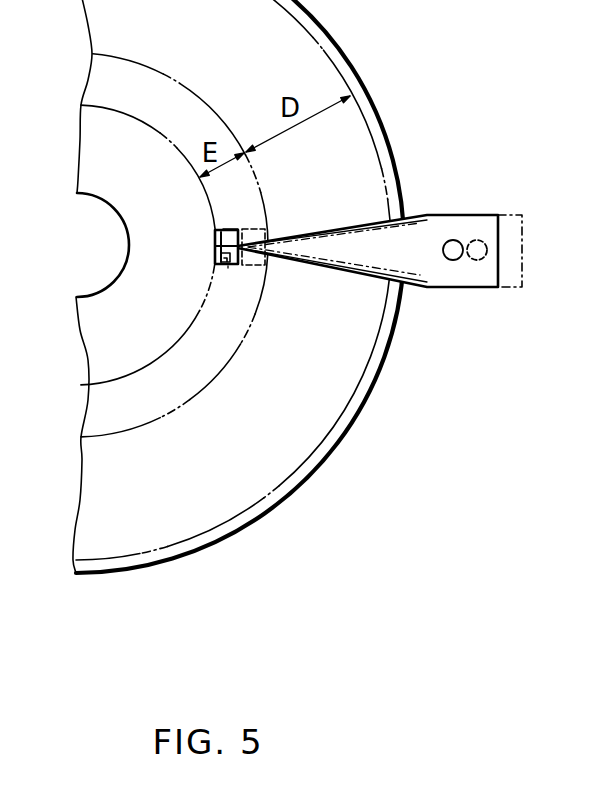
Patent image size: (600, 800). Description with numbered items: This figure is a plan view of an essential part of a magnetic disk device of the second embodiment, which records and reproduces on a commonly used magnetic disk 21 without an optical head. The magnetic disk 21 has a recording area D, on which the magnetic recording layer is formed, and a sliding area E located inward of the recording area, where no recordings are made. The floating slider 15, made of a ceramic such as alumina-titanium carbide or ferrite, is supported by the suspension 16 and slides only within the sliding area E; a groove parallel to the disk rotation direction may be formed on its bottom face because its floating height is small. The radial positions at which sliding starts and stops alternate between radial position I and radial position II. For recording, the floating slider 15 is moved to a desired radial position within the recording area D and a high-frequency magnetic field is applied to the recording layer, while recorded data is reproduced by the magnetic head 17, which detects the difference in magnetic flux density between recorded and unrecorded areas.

The floating slider 15 is at (214, 243).
The suspension 16 is at (412, 213).
The magnetic head 17 is at (228, 266).
The magnetic disk 21 is at (326, 72).
The radial position I is at (223, 229).
The radial position II is at (262, 230).